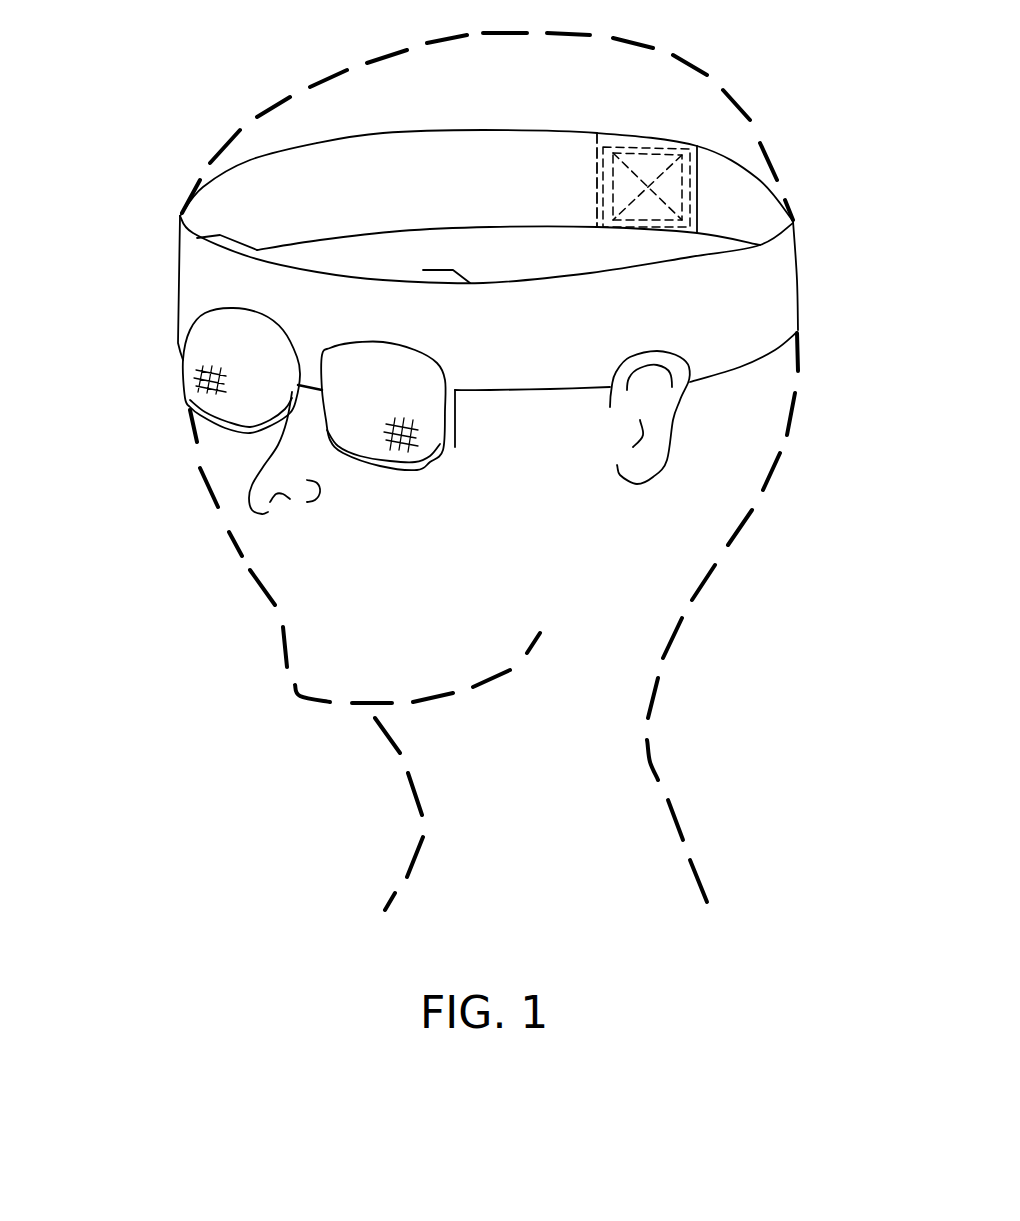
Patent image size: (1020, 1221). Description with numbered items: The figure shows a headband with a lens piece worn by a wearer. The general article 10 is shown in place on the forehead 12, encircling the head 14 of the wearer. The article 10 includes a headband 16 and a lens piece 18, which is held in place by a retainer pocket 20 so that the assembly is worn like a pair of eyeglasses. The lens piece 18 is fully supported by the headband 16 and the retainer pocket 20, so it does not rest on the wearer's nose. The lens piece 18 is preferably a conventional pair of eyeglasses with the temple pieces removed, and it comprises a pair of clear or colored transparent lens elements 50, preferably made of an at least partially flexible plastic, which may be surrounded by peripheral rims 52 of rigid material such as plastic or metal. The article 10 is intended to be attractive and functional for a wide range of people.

The general article 10 is at (778, 383).
The forehead 12 is at (180, 215).
The head 14 is at (693, 65).
The headband 16 is at (777, 282).
The lens piece 18 is at (237, 458).
The retainer pocket 20 is at (190, 263).
The transparent lens elements 50 is at (243, 395).
The peripheral rims 52 is at (220, 422).